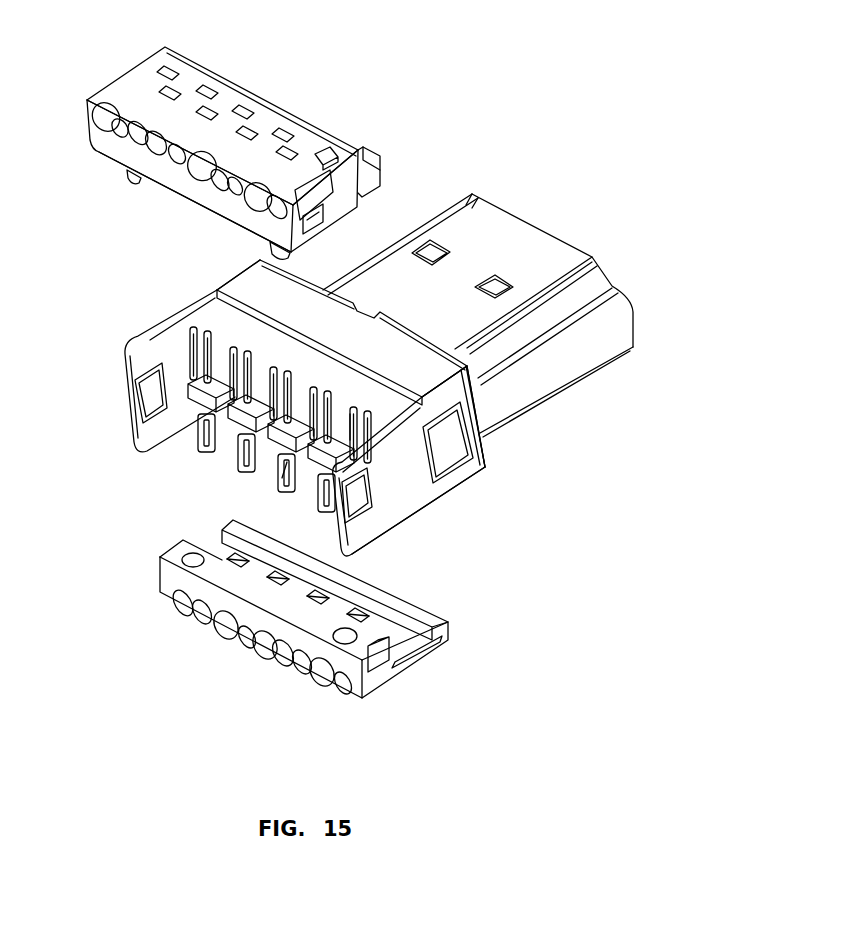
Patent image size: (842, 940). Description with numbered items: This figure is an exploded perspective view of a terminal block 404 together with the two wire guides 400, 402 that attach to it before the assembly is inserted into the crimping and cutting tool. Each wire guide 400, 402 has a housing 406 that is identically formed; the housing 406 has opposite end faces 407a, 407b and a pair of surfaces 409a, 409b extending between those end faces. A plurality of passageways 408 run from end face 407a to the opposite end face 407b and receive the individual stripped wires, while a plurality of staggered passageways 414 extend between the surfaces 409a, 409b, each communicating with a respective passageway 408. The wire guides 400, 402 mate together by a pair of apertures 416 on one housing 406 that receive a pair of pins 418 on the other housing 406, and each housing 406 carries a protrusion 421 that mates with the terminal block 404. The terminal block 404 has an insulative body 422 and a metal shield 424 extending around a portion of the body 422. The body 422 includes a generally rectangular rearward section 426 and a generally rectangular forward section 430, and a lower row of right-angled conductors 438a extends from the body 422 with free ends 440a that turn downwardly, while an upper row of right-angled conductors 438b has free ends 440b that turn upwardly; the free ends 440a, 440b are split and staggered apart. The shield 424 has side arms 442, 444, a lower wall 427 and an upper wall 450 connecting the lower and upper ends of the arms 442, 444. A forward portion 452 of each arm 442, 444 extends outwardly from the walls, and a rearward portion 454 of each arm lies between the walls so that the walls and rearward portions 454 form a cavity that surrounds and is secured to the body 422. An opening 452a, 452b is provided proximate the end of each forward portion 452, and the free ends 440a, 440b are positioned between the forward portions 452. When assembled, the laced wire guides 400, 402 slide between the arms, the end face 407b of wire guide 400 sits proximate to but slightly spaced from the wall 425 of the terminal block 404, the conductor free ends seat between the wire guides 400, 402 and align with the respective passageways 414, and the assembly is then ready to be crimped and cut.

The wire guide 400 is at (437, 657).
The wire guide 402 is at (268, 68).
The terminal block 404 is at (518, 202).
The housing 406 is at (308, 128).
The end face 407a is at (112, 148).
The end face 407b is at (320, 140).
The passageways 408 is at (140, 150).
The surface 409a is at (265, 230).
The surface 409b is at (130, 90).
The staggered passageways 414 is at (216, 92).
The apertures 416 is at (183, 553).
The pins 418 is at (134, 178).
The protrusion 421 is at (368, 218).
The insulative body 422 is at (627, 325).
The metal shield 424 is at (413, 333).
The wall 425 is at (233, 400).
The rearward section 426 is at (582, 365).
The lower wall 427 is at (470, 478).
The forward section 430 is at (318, 366).
The conductor 438a is at (208, 452).
The conductor 438b is at (192, 333).
The free end 440a is at (288, 483).
The free end 440b is at (348, 410).
The side arm 442 is at (482, 478).
The side arm 444 is at (150, 352).
The upper wall 450 is at (474, 432).
The forward portion 452 is at (124, 366).
The opening 452a is at (360, 510).
The opening 452b is at (143, 400).
The rearward portion 454 is at (213, 308).